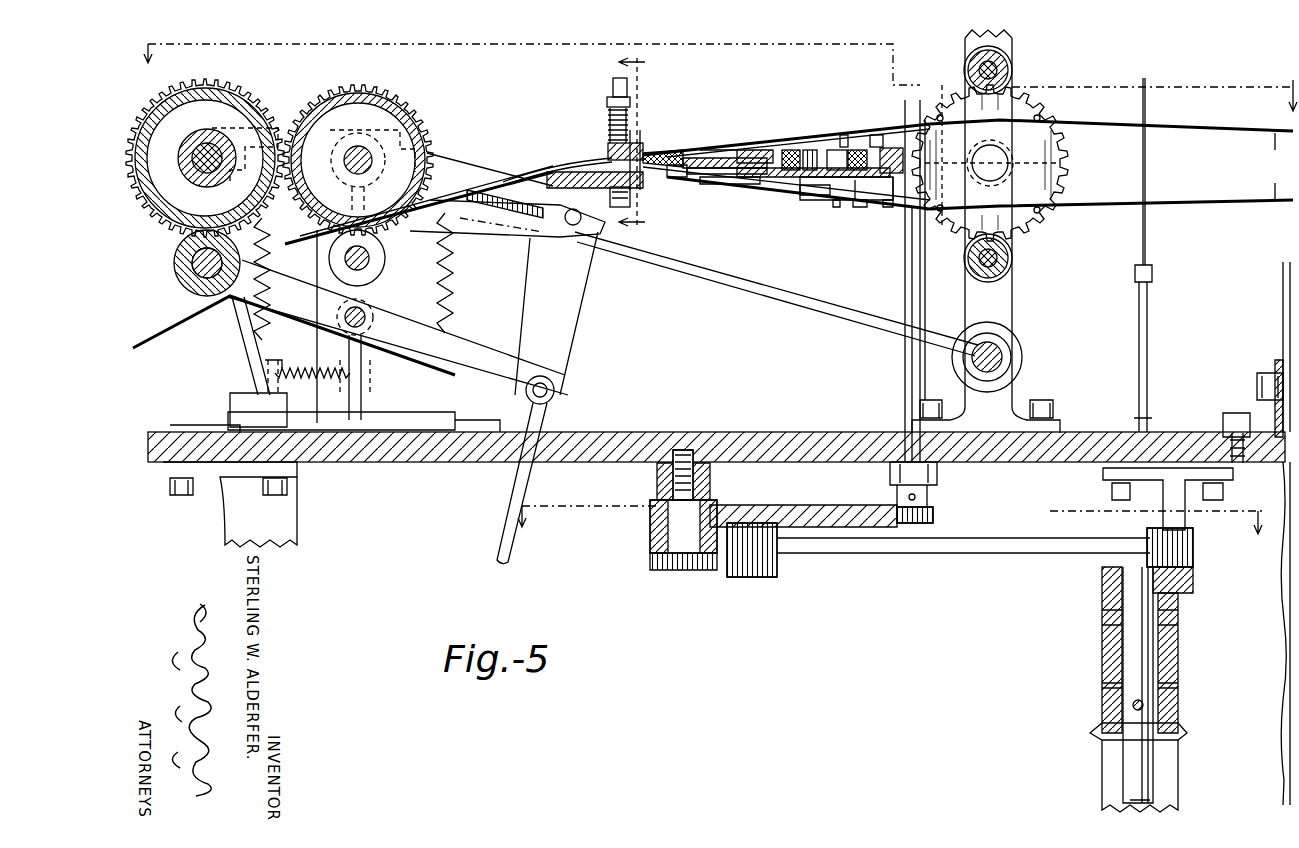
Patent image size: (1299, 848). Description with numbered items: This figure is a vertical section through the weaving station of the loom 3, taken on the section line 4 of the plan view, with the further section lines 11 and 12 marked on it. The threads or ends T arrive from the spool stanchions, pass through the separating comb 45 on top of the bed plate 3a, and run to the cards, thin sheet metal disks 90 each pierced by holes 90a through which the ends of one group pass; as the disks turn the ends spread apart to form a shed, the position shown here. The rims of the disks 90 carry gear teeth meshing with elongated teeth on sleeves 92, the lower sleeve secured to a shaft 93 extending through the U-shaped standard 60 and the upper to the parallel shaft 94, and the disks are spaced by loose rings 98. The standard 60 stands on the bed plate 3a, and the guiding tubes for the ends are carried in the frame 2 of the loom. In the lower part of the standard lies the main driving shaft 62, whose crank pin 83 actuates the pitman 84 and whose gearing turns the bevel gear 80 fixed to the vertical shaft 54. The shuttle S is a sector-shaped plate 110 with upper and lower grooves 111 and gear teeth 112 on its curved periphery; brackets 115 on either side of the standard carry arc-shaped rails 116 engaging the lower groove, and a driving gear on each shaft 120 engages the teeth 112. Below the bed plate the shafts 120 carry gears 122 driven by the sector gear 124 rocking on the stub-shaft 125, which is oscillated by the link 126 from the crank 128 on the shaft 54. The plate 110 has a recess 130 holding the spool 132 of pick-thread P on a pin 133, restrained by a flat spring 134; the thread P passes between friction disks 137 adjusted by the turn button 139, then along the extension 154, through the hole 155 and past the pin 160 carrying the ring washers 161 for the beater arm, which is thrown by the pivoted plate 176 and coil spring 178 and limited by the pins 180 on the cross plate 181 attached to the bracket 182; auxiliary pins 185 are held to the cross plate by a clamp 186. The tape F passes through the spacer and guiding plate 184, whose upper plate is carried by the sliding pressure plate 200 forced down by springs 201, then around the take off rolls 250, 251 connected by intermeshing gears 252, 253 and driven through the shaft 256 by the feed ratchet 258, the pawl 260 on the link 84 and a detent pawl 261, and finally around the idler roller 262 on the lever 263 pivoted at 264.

The frame 2 is at (1283, 280).
The cylinder 3 is at (1178, 652).
The bed plate 3a is at (1178, 434).
The section line 4 is at (713, 74).
The section line 11 is at (890, 529).
The section line 12 is at (642, 147).
The separating comb 45 is at (1147, 175).
The vertical shaft 54 is at (1148, 775).
The U-shaped standard 60 is at (1012, 308).
The main horizontal driving shaft 62 is at (1002, 355).
The bevel gear 80 is at (1178, 712).
The crank pin 83 is at (1011, 365).
The pitman 84 is at (866, 328).
The cards 90 is at (1050, 164).
The holes 90a is at (918, 103).
The sleeves 92 is at (1000, 56).
The shaft 93 is at (968, 262).
The parallel shaft 94 is at (1000, 71).
The loose rings 98 is at (1008, 64).
The shuttle plate 110 is at (837, 207).
The grooves 111 is at (860, 150).
The gear teeth 112 is at (893, 148).
The bracket 115 is at (897, 207).
The arc-shaped rails 116 is at (800, 195).
The shaft 120 is at (904, 292).
The gears 122 is at (935, 515).
The sector gear 124 is at (838, 505).
The stub-shaft 125 is at (683, 563).
The link 126 is at (932, 553).
The crank 128 is at (1193, 578).
The recess 130 is at (840, 150).
The spool 132 is at (792, 150).
The pin 133 is at (812, 150).
The flat spring 134 is at (868, 207).
The friction disks 137 is at (772, 168).
The turn button 139 is at (755, 150).
The extension 154 is at (740, 184).
The hole 155 is at (708, 174).
The pin 160 is at (685, 177).
The ring washers 161 is at (695, 158).
The pivoted plate 176 is at (660, 150).
The coil spring 178 is at (745, 150).
The pins 180 is at (613, 82).
The cross plate 181 is at (570, 168).
The bracket 182 is at (565, 292).
The spacer and guiding plate 184 is at (610, 168).
The auxiliary pins 185 is at (638, 148).
The clamp 186 is at (640, 200).
The sliding pressure plate 200 is at (608, 134).
The springs 201 is at (607, 102).
The take off roll 250 is at (415, 104).
The take off roll 251 is at (268, 116).
The gear 252 is at (375, 88).
The gear 253 is at (237, 90).
The shaft 256 is at (372, 257).
The feed ratchet 258 is at (455, 270).
The pawl 260 is at (430, 118).
The detent pawl 261 is at (372, 384).
The idler roller 262 is at (173, 290).
The lever 263 is at (450, 336).
The pivot 264 is at (368, 310).
The fabric or tape F is at (520, 178).
The pick-thread P is at (780, 183).
The shuttle S is at (735, 140).
The threads or ends T is at (1277, 166).